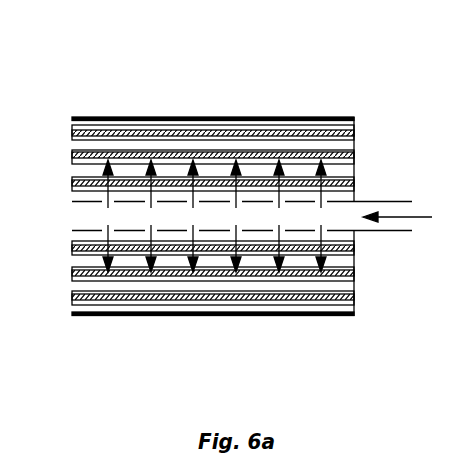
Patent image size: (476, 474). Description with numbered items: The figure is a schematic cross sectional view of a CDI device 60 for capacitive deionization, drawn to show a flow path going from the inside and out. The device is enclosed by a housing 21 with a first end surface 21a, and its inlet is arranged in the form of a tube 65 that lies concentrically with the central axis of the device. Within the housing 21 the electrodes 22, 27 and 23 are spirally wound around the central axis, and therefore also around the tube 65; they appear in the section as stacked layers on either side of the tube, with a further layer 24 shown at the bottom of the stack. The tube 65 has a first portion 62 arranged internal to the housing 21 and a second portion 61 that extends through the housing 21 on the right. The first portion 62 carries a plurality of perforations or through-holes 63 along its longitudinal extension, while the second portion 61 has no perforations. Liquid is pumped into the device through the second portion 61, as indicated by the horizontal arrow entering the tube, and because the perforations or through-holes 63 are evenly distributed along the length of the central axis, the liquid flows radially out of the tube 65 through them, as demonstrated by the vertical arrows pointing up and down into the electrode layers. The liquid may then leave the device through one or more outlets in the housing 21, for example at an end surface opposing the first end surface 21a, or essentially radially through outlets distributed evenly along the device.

The CDI device 60 is at (112, 58).
The housing 21 is at (281, 117).
The first end surface 21a is at (355, 140).
The electrode 22 is at (72, 126).
The electrode 27 is at (75, 133).
The electrode 23 is at (72, 143).
The lower layer 24 is at (78, 287).
The second portion 61 is at (372, 201).
The first portion 62 is at (97, 205).
The perforations or through-holes 63 is at (276, 206).
The tube 65 is at (372, 232).